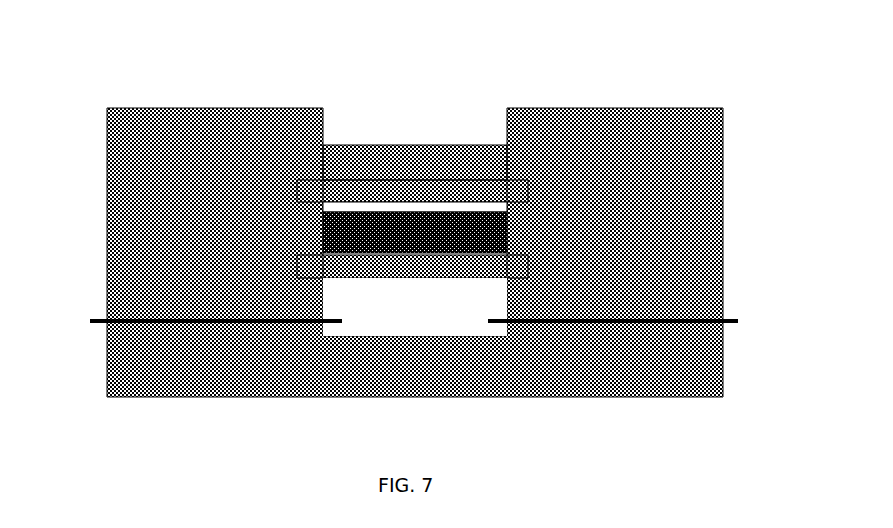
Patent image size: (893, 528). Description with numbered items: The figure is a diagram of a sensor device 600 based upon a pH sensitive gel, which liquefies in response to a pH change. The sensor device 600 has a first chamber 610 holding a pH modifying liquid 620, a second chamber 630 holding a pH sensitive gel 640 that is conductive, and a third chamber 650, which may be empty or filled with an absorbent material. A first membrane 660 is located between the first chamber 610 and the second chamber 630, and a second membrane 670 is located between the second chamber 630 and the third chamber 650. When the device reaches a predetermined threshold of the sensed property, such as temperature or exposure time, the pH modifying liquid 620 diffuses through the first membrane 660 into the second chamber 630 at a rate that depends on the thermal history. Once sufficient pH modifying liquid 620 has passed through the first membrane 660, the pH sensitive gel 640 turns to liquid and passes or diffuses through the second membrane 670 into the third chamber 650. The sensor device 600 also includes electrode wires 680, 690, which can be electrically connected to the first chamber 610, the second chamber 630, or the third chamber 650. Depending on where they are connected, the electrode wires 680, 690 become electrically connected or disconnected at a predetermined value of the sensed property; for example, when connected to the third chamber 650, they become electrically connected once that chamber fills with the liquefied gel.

The sensor device 600 is at (437, 205).
The first chamber 610 is at (507, 128).
The pH modifying liquid 620 is at (323, 163).
The second chamber 630 is at (507, 207).
The pH sensitive gel 640 is at (323, 228).
The third chamber 650 is at (507, 299).
The first membrane 660 is at (297, 188).
The second membrane 670 is at (297, 266).
The electrode wire 680 is at (92, 321).
The electrode wire 690 is at (745, 319).